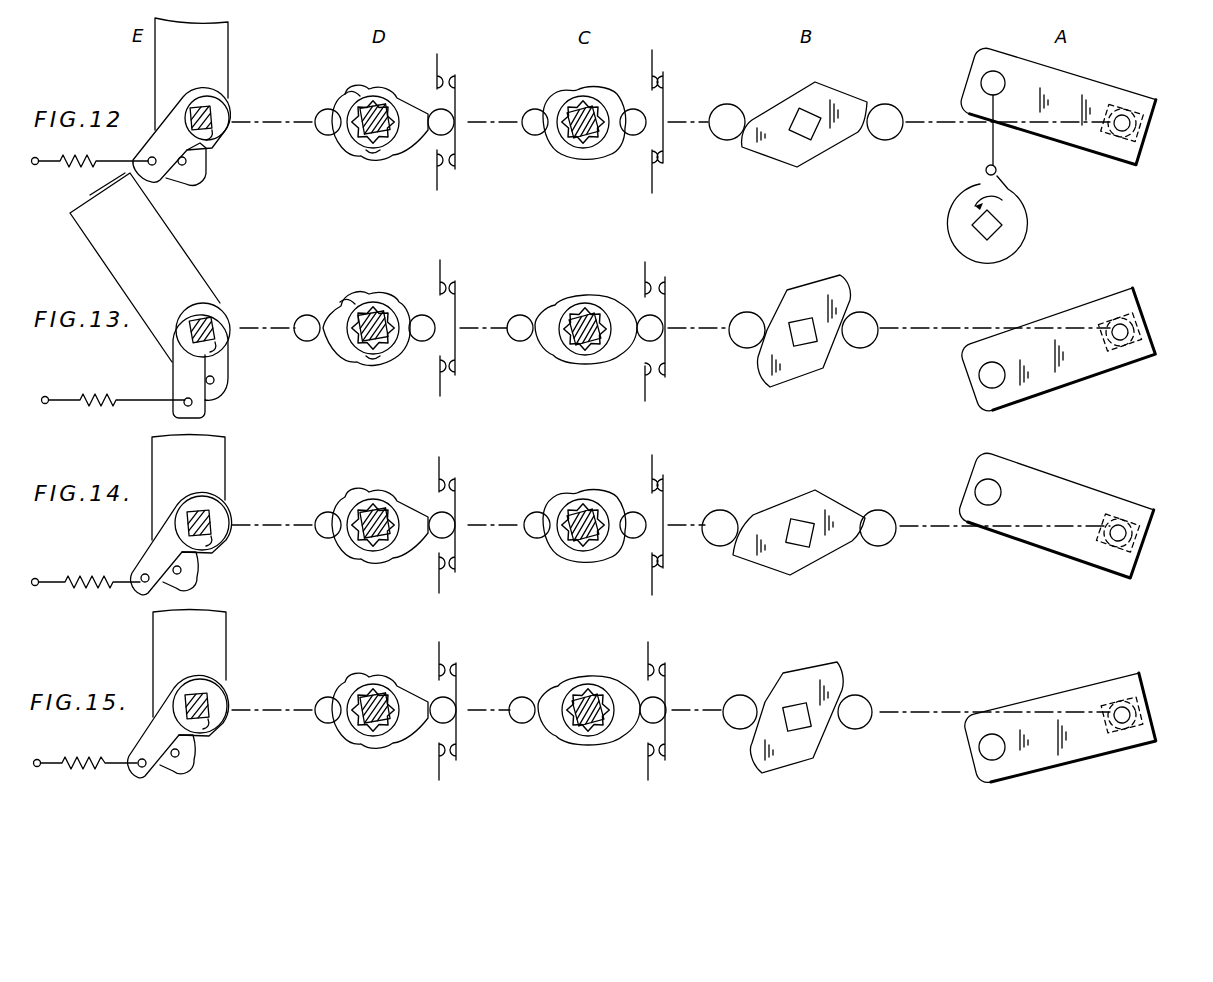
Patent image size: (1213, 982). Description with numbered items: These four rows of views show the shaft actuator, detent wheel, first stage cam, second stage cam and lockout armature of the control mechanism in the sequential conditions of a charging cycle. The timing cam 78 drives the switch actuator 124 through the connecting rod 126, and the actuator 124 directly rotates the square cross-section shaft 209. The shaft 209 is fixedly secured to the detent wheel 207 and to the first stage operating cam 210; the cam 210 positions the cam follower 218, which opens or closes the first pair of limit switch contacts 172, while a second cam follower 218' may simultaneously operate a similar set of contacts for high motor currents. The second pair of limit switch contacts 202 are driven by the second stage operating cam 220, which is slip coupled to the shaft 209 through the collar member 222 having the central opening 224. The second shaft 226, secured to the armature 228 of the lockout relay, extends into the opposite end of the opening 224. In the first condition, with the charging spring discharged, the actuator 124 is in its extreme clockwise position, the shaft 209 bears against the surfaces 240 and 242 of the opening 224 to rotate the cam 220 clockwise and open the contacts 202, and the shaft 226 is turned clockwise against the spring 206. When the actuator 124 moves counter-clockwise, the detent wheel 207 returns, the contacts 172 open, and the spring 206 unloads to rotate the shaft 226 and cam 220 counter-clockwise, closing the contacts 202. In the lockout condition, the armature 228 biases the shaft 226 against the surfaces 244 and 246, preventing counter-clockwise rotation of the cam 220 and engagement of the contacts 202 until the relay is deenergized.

In FIG. 12, the timing cam 78 is at (1027, 222).
In FIG. 12, the switch actuator 124 is at (1055, 135).
In FIG. 13, the switch actuator 124 is at (1052, 385).
In FIG. 14, the switch actuator 124 is at (1058, 548).
In FIG. 15, the switch actuator 124 is at (1062, 770).
In FIG. 12, the connecting rod 126 is at (985, 80).
In FIG. 13, the connecting rod 126 is at (985, 380).
In FIG. 14, the connecting rod 126 is at (985, 492).
In FIG. 15, the connecting rod 126 is at (982, 760).
In FIG. 12, the first pair of limit switch contacts 172 is at (661, 69).
In FIG. 13, the first pair of limit switch contacts 172 is at (658, 278).
In FIG. 14, the first pair of limit switch contacts 172 is at (661, 473).
In FIG. 15, the first pair of limit switch contacts 172 is at (688, 632).
In FIG. 12, the second pair of limit switch contacts 202 is at (460, 76).
In FIG. 13, the second pair of limit switch contacts 202 is at (460, 282).
In FIG. 14, the second pair of limit switch contacts 202 is at (460, 474).
In FIG. 15, the second pair of limit switch contacts 202 is at (455, 656).
In FIG. 12, the spring 206 is at (72, 168).
In FIG. 13, the spring 206 is at (115, 400).
In FIG. 14, the spring 206 is at (98, 590).
In FIG. 15, the spring 206 is at (90, 770).
In FIG. 12, the detent wheel 207 is at (830, 153).
In FIG. 13, the detent wheel 207 is at (823, 368).
In FIG. 14, the detent wheel 207 is at (828, 555).
In FIG. 15, the detent wheel 207 is at (815, 748).
In FIG. 12, the shaft 209 is at (388, 147).
In FIG. 13, the shaft 209 is at (572, 348).
In FIG. 14, the shaft 209 is at (388, 548).
In FIG. 15, the shaft 209 is at (573, 730).
In FIG. 12, the first stage operating cam 210 is at (572, 98).
In FIG. 13, the first stage operating cam 210 is at (580, 305).
In FIG. 14, the first stage operating cam 210 is at (580, 502).
In FIG. 15, the first stage operating cam 210 is at (600, 693).
In FIG. 12, the cam follower 218 is at (623, 98).
In FIG. 13, the cam follower 218 is at (635, 347).
In FIG. 14, the cam follower 218 is at (627, 506).
In FIG. 15, the cam follower 218 is at (635, 731).
In FIG. 12, the cam follower 218' is at (522, 108).
In FIG. 13, the cam follower 218' is at (527, 311).
In FIG. 14, the cam follower 218' is at (525, 508).
In FIG. 15, the cam follower 218' is at (512, 726).
In FIG. 12, the second stage operating cam 220 is at (396, 105).
In FIG. 13, the second stage operating cam 220 is at (395, 305).
In FIG. 14, the second stage operating cam 220 is at (396, 505).
In FIG. 15, the second stage operating cam 220 is at (388, 688).
In FIG. 12, the collar member 222 is at (378, 103).
In FIG. 13, the collar member 222 is at (378, 308).
In FIG. 14, the collar member 222 is at (376, 503).
In FIG. 15, the collar member 222 is at (362, 690).
In FIG. 12, the central opening 224 is at (198, 140).
In FIG. 13, the central opening 224 is at (220, 312).
In FIG. 14, the central opening 224 is at (220, 530).
In FIG. 15, the central opening 224 is at (220, 708).
In FIG. 12, the second shaft 226 is at (216, 112).
In FIG. 13, the second shaft 226 is at (225, 330).
In FIG. 14, the second shaft 226 is at (215, 512).
In FIG. 15, the second shaft 226 is at (365, 735).
In FIG. 12, the armature 228 is at (218, 74).
In FIG. 13, the armature 228 is at (205, 290).
In FIG. 14, the armature 228 is at (220, 478).
In FIG. 15, the armature 228 is at (220, 648).
In FIG. 12, the surface 240 is at (364, 102).
In FIG. 13, the surface 240 is at (357, 310).
In FIG. 12, the surface 242 is at (372, 150).
In FIG. 13, the surface 242 is at (388, 350).
In FIG. 12, the surface 244 is at (195, 107).
In FIG. 13, the surface 244 is at (195, 318).
In FIG. 14, the surface 244 is at (195, 505).
In FIG. 15, the surface 244 is at (215, 692).
In FIG. 12, the surface 246 is at (214, 138).
In FIG. 13, the surface 246 is at (225, 348).
In FIG. 14, the surface 246 is at (208, 550).
In FIG. 15, the surface 246 is at (210, 725).